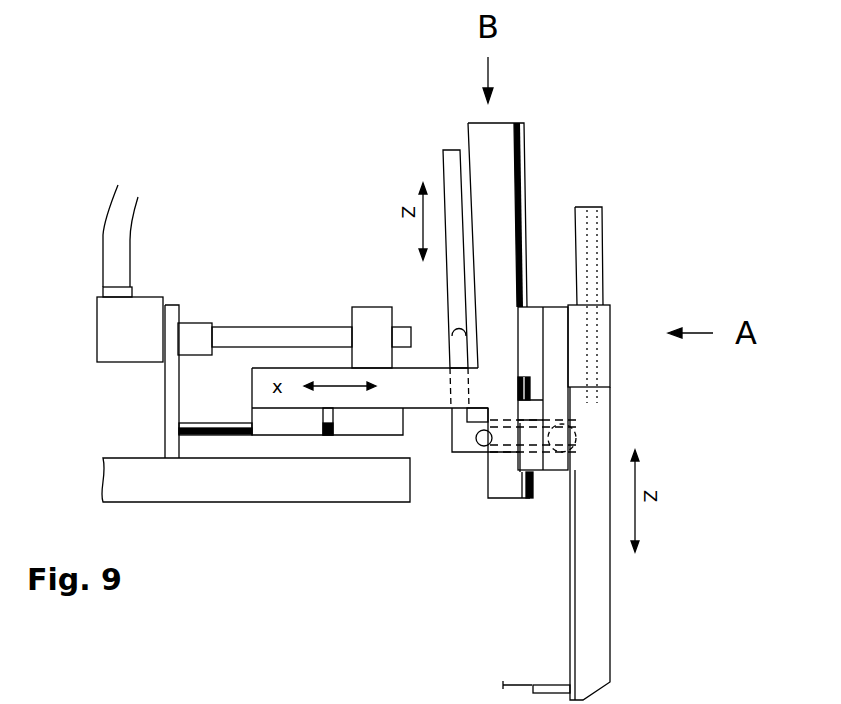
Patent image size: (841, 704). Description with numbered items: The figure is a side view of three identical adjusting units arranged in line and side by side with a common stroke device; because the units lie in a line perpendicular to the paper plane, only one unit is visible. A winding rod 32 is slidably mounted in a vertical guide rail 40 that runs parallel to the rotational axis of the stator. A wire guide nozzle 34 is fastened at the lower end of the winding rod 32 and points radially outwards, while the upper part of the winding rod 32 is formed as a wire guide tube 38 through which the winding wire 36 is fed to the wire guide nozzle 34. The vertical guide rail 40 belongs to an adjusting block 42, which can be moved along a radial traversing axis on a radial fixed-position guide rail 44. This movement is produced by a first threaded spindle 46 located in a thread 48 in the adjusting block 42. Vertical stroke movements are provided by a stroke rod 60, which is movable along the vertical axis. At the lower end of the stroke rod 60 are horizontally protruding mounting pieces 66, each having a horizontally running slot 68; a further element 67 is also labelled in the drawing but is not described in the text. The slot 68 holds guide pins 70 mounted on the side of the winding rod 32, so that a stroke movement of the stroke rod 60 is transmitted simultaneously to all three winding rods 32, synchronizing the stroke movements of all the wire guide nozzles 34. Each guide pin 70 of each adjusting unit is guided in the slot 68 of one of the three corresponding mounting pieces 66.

The winding rod 32 is at (603, 603).
The wire guide nozzle 34 is at (557, 683).
The winding wire 36 is at (590, 203).
The wire guide tube 38 is at (592, 290).
The vertical guide rail 40 is at (520, 155).
The adjusting block 42 is at (405, 397).
The radial fixed-position guide rail 44 is at (230, 433).
The first threaded spindle 46 is at (238, 333).
The thread 48 is at (348, 315).
The stroke rod 60 is at (447, 172).
The mounting pieces 66 is at (463, 443).
The coupling element 67 is at (219, 703).
The slot 68 is at (478, 447).
The guide pins 70 is at (574, 424).